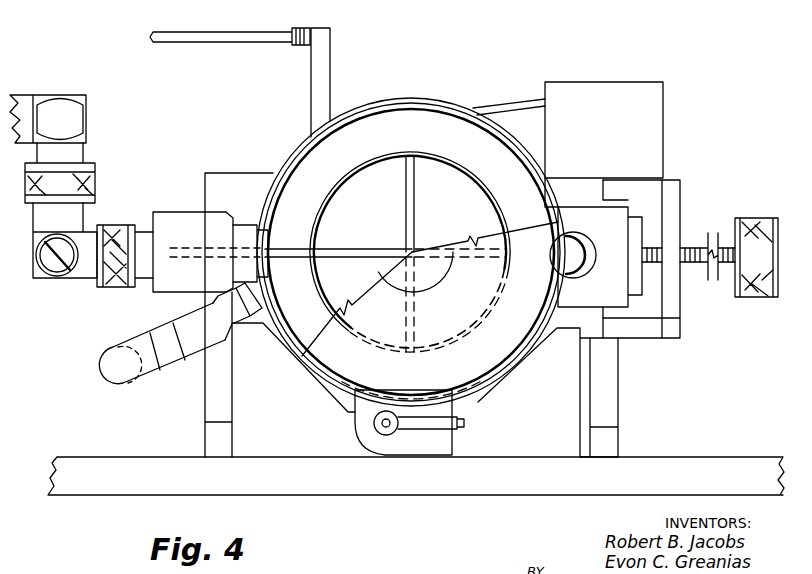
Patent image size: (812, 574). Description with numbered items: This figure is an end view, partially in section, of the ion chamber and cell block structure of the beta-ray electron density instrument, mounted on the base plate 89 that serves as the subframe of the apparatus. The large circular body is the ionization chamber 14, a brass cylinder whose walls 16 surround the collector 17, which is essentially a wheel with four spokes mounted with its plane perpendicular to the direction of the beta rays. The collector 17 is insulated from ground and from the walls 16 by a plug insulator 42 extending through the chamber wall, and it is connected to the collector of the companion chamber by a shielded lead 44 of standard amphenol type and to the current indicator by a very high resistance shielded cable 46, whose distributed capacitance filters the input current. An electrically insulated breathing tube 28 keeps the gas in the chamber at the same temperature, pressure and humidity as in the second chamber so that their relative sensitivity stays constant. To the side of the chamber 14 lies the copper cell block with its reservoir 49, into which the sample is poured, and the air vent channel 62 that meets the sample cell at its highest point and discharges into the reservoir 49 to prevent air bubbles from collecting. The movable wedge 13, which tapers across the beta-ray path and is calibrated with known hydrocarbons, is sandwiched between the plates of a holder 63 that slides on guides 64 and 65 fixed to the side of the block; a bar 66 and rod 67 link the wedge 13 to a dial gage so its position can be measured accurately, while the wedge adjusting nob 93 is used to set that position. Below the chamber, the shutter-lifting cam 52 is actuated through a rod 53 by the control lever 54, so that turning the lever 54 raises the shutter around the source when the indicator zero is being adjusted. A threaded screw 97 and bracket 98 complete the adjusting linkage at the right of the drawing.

The movable wedge 13 is at (573, 262).
The ionization chamber 14 is at (439, 91).
The walls 16 is at (329, 130).
The collector 17 is at (347, 183).
The breathing tube 28 is at (107, 355).
The plug insulator 42 is at (176, 204).
The shielded lead 44 is at (116, 225).
The shielded cable 46 is at (33, 95).
The reservoir 49 is at (634, 76).
The cam 52 is at (452, 443).
The rod 53 is at (374, 426).
The lever 54 is at (464, 424).
The air vent channel 62 is at (502, 103).
The holder 63 is at (600, 262).
The guide 64 is at (578, 190).
The guide 65 is at (583, 315).
The bar 66 is at (334, 60).
The rod 67 is at (226, 32).
The base plate 89 is at (700, 457).
The wedge adjusting nob 93 is at (744, 218).
The threaded screw 97 is at (688, 248).
The bracket 98 is at (599, 308).